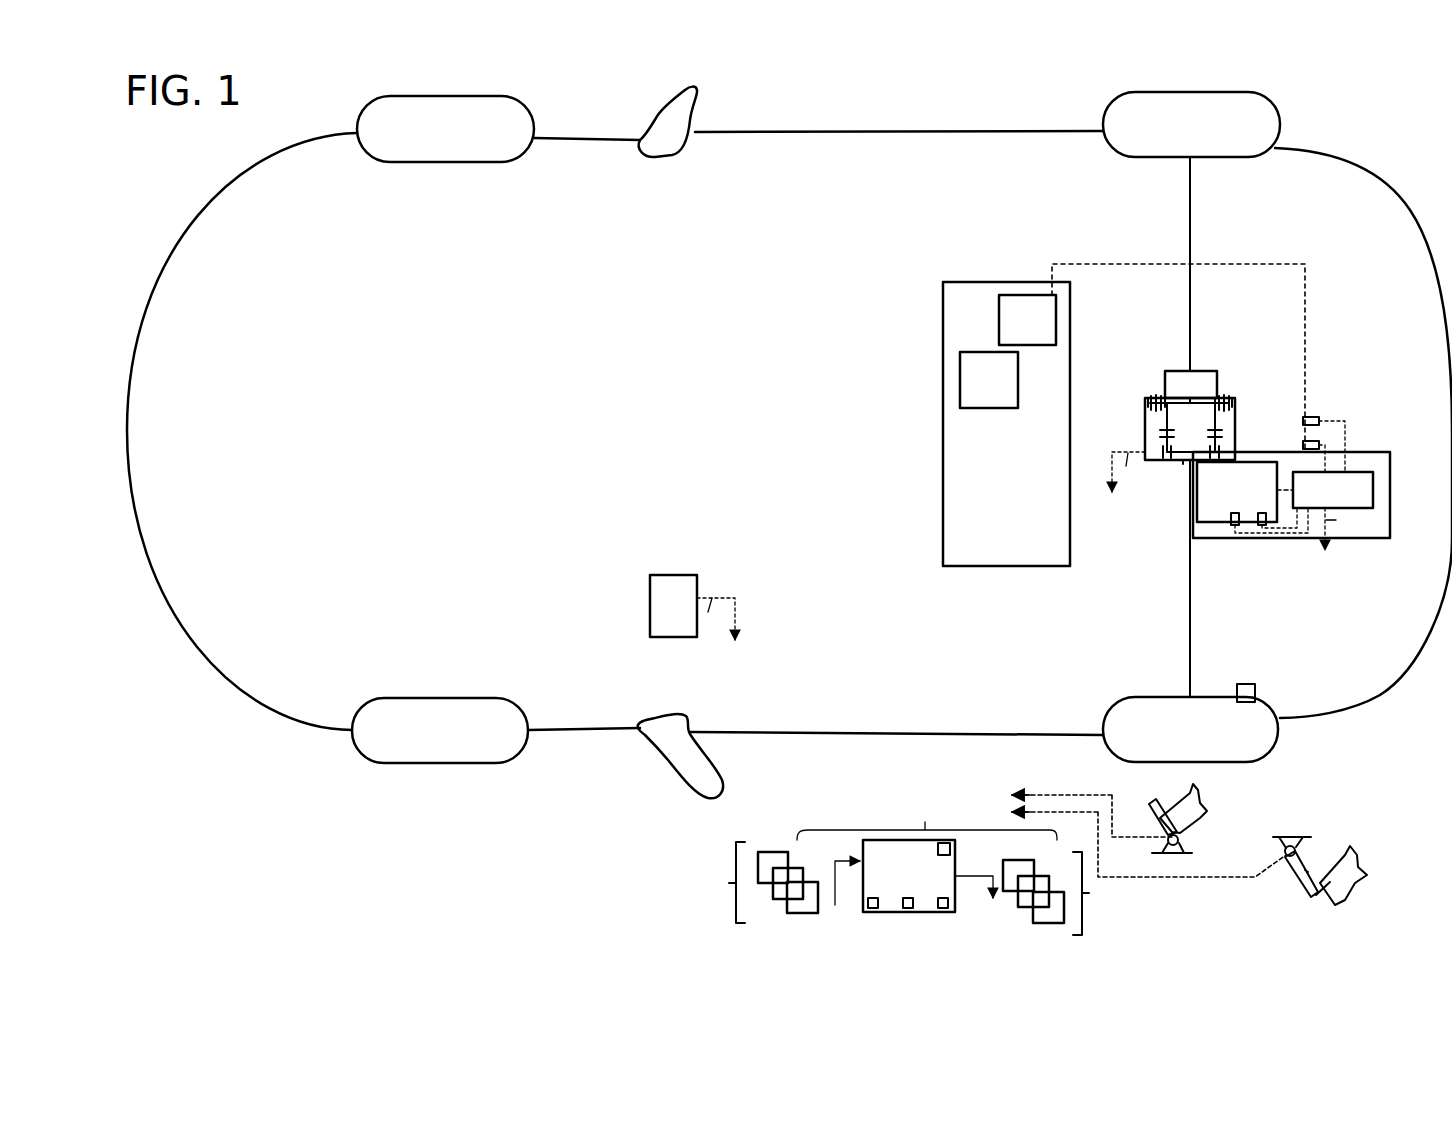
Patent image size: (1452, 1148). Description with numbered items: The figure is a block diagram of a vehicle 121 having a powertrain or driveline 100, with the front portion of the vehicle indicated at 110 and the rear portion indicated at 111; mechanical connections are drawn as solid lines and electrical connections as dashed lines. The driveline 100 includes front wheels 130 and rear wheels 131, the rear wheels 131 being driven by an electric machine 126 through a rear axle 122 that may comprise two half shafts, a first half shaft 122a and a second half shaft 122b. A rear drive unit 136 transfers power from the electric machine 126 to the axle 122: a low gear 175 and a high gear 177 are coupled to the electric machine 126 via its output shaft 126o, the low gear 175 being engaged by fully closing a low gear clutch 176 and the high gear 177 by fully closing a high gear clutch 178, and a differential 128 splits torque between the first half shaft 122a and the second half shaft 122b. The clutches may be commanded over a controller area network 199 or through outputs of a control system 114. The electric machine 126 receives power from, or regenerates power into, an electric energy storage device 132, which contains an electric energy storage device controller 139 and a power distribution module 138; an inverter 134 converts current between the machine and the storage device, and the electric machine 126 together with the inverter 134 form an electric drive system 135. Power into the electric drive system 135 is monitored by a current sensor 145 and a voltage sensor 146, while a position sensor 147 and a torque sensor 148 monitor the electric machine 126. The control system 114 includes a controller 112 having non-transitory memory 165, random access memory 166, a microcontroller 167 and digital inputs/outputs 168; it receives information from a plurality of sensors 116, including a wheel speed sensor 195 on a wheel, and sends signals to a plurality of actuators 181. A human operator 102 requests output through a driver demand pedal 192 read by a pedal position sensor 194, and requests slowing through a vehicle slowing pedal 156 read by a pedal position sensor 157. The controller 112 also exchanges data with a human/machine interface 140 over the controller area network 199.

The driveline 100 is at (1318, 290).
The human operator 102 is at (1190, 805).
The front portion of vehicle 110 is at (148, 230).
The rear portion of vehicle 111 is at (1413, 176).
The controller 112 is at (914, 876).
The control system 114 is at (927, 808).
The sensors 116 is at (738, 882).
The vehicle 121 is at (1394, 722).
The rear axle 122 is at (1216, 236).
The first half shaft 122a is at (1190, 215).
The second half shaft 122b is at (1190, 633).
The electric machine 126 is at (1245, 492).
The output shaft 126o is at (1187, 462).
The differential 128 is at (1190, 415).
The front wheels 130 is at (470, 96).
The rear wheels 131 is at (1230, 92).
The electric energy storage device 132 is at (1006, 424).
The inverter 134 is at (1333, 490).
The electric drive system 135 is at (1390, 452).
The rear drive unit 136 is at (1324, 387).
The power distribution module 138 is at (1027, 320).
The electric energy storage device controller 139 is at (989, 380).
The human/machine interface 140 is at (673, 606).
The current sensor 145 is at (1235, 527).
The voltage sensor 146 is at (1262, 527).
The position sensor 147 is at (1318, 420).
The torque sensor 148 is at (1318, 446).
The vehicle slowing pedal 156 is at (1314, 899).
The pedal position sensor 157 is at (1284, 851).
The non-transitory memory 165 is at (870, 906).
The random access memory 166 is at (907, 908).
The microcontroller 167 is at (944, 908).
The digital inputs/outputs 168 is at (950, 849).
The low gear 175 is at (1144, 413).
The low gear clutch 176 is at (1160, 440).
The high gear 177 is at (1236, 412).
The high gear clutch 178 is at (1226, 435).
The actuators 181 is at (1085, 893).
The pedal 192 is at (1165, 836).
The pedal position sensor 194 is at (1179, 841).
The wheel speed sensor 195 is at (1246, 684).
The controller area network 199 is at (1031, 568).